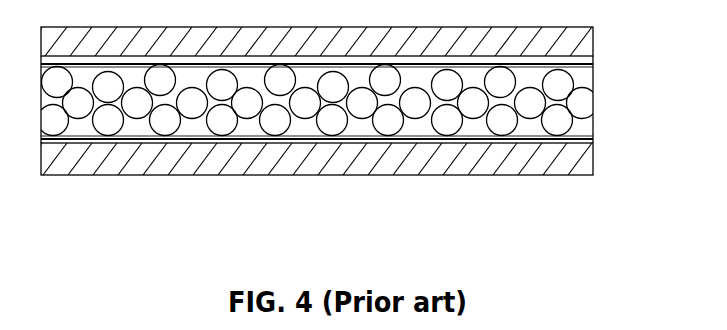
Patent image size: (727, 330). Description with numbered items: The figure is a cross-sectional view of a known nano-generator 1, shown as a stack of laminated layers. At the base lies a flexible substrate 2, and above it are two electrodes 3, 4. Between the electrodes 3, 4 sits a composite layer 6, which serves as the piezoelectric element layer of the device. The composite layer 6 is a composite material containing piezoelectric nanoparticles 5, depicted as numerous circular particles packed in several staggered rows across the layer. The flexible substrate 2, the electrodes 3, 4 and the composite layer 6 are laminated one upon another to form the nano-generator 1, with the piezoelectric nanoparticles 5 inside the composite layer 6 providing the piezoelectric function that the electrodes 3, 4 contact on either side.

The nano-generator 1 is at (258, 182).
The flexible substrate 2 is at (593, 160).
The electrode 3 is at (593, 138).
The electrode 4 is at (593, 56).
The piezoelectric nanoparticles 5 is at (570, 112).
The composite layer 6 is at (323, 99).